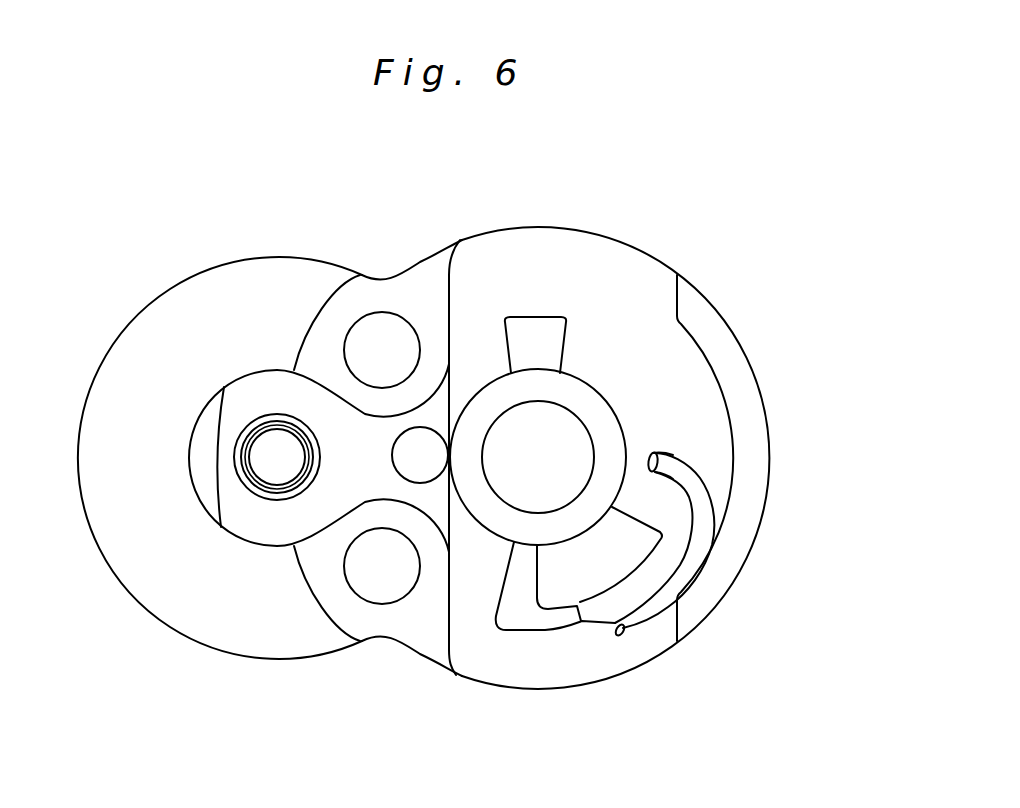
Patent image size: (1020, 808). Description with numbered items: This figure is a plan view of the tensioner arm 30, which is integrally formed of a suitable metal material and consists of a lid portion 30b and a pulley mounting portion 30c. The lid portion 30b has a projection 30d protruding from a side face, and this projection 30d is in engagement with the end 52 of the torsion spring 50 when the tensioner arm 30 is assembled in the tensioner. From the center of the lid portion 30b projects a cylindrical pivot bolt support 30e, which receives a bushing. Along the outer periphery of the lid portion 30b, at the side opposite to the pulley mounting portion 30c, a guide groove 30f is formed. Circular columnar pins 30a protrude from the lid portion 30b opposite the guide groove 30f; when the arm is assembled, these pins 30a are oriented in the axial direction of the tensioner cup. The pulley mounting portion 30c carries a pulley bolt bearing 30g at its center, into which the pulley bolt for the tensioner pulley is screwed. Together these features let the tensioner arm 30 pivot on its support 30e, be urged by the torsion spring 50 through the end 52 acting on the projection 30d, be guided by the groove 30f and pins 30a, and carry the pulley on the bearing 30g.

The tensioner arm 30 is at (645, 234).
The circular columnar pins 30a is at (364, 320).
The lid portion 30b is at (532, 238).
The pulley mounting portion 30c is at (131, 375).
The projection 30d is at (545, 622).
The cylindrical pivot bolt support 30e is at (600, 412).
The guide groove 30f is at (733, 533).
The pulley bolt bearing 30g is at (263, 390).
The torsion spring 50 is at (647, 613).
The end of the torsion spring 52 is at (678, 460).